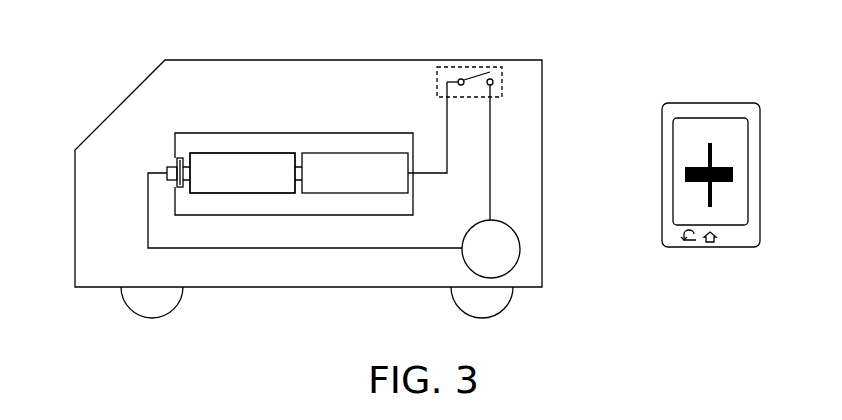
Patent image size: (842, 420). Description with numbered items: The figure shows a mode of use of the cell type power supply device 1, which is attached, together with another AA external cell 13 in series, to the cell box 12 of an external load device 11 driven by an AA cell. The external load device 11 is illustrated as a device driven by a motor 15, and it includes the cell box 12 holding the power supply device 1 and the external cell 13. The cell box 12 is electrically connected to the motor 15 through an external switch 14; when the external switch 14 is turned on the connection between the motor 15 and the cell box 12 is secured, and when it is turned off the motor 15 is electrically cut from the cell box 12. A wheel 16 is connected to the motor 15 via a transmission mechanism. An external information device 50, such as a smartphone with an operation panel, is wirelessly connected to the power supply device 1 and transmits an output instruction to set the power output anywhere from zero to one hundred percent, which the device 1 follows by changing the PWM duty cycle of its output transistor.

The cell type power supply device 1 is at (352, 140).
The external load device 11 is at (542, 97).
The cell box 12 is at (397, 133).
The external cell 13 is at (237, 153).
The external switch 14 is at (477, 66).
The motor 15 is at (520, 246).
The wheel 16 is at (173, 312).
The external information device 50 is at (695, 103).